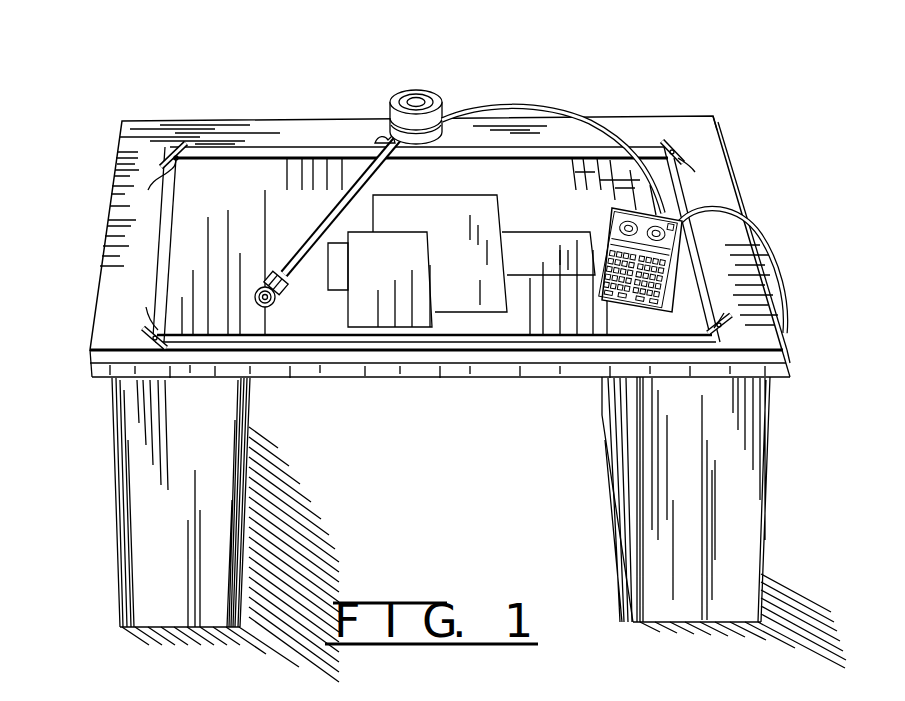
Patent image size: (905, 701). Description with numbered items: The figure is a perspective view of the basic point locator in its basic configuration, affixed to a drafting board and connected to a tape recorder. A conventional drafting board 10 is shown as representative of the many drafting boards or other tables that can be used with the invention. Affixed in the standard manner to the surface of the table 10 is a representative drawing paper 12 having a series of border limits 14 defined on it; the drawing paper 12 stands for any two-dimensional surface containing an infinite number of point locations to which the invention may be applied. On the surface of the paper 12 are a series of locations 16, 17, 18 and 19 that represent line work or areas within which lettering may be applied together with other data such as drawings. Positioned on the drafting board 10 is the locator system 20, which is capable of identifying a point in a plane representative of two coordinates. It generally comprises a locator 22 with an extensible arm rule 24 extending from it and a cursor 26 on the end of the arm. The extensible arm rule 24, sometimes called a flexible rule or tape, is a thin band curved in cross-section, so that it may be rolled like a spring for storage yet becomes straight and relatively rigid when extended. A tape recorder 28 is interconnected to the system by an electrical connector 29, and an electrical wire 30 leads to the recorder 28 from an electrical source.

The drafting board 10 is at (183, 118).
The drawing paper 12 is at (282, 147).
The border limits 14 is at (170, 221).
The location 16 is at (341, 226).
The location 17 is at (322, 278).
The location 18 is at (443, 191).
The location 19 is at (533, 225).
The locator system 20 is at (496, 99).
The locator 22 is at (434, 91).
The extensible arm rule 24 is at (302, 236).
The cursor 26 is at (270, 303).
The tape recorder 28 is at (638, 314).
The electrical connector 29 is at (577, 116).
The electrical wire 30 is at (787, 295).